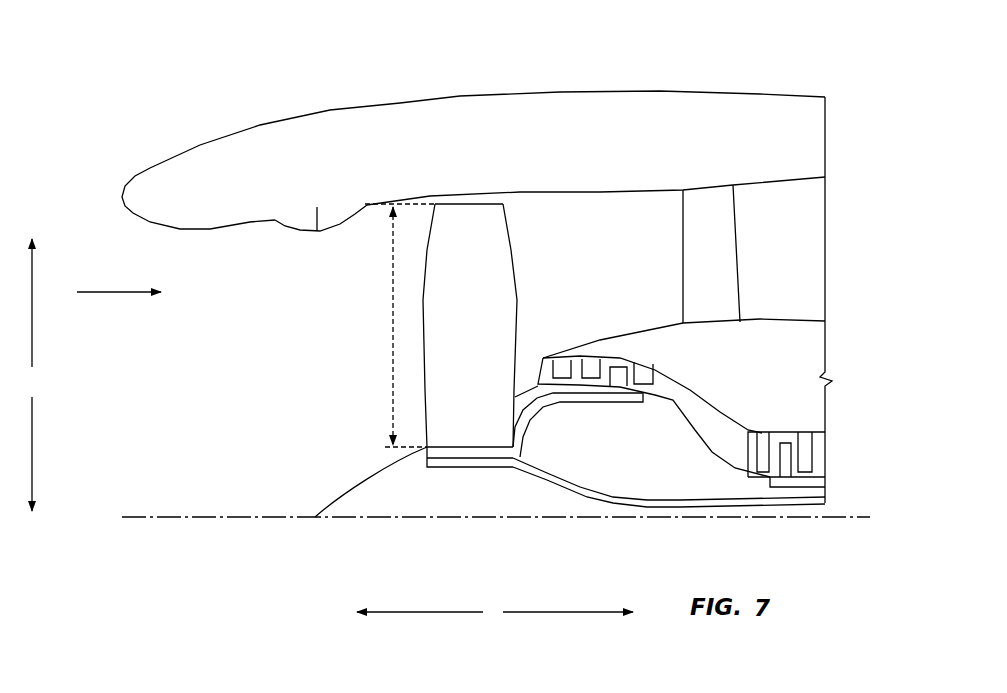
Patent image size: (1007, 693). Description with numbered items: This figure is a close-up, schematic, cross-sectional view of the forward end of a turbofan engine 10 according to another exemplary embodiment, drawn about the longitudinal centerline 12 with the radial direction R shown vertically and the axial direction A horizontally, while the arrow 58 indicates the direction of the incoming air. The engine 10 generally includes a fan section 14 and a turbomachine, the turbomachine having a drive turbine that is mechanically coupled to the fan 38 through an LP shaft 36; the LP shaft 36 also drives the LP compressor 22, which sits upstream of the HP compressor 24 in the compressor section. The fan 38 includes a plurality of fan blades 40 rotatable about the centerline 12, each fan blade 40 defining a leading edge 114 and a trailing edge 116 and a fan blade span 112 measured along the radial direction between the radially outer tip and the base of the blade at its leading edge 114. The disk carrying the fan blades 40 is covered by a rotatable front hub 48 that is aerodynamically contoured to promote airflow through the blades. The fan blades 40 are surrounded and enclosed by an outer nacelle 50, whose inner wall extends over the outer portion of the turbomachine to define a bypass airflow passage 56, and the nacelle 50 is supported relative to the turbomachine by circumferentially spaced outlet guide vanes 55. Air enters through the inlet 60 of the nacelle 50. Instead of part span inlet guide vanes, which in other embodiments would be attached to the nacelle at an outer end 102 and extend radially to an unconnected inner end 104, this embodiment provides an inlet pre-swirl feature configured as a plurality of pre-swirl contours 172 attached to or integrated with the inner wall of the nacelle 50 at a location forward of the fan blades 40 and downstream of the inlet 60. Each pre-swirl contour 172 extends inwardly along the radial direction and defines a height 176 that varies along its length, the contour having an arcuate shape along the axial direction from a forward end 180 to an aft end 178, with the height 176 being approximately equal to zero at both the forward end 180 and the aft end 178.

The turbofan engine 10 is at (447, 324).
The longitudinal centerline 12 is at (201, 519).
The fan section 14 is at (473, 189).
The low pressure compressor 22 is at (668, 357).
The high pressure compressor 24 is at (786, 414).
The LP shaft 36 is at (678, 509).
The fan 38 is at (482, 183).
The fan blades 40 is at (500, 325).
The front hub 48 is at (334, 503).
The outer nacelle 50 is at (461, 97).
The outlet guide vanes 55 is at (729, 265).
The bypass airflow passage 56 is at (646, 275).
The airflow direction 58 is at (128, 294).
The inlet 60 is at (93, 250).
The outer end 102 is at (349, 202).
The inner end 104 is at (303, 235).
The fan blade span 112 is at (392, 356).
The leading edge 114 is at (417, 300).
The trailing edge 116 is at (521, 291).
The pre-swirl contours 172 is at (318, 235).
The height 176 is at (317, 204).
The aft end 178 is at (337, 237).
The forward end 180 is at (266, 226).